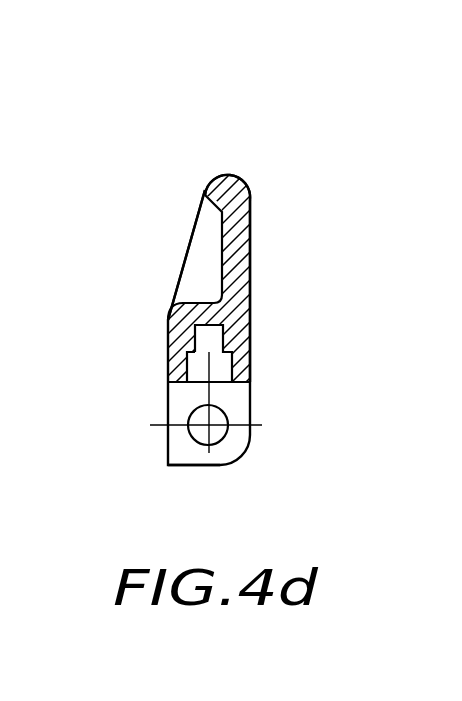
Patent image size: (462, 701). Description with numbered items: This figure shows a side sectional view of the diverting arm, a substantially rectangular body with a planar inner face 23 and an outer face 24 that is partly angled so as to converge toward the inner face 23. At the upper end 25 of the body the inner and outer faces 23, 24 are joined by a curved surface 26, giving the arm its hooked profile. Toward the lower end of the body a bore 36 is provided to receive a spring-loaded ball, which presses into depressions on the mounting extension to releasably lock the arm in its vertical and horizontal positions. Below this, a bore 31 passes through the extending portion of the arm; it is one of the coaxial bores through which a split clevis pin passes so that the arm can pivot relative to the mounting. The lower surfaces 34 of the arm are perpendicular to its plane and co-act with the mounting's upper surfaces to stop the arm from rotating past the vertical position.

The upper end 25 is at (250, 190).
The curved surface 26 is at (228, 181).
The outer face 24 is at (185, 262).
The inner face 23 is at (250, 268).
The bore 36 is at (212, 369).
The bore 31 is at (240, 425).
The lower surfaces 34 is at (190, 465).